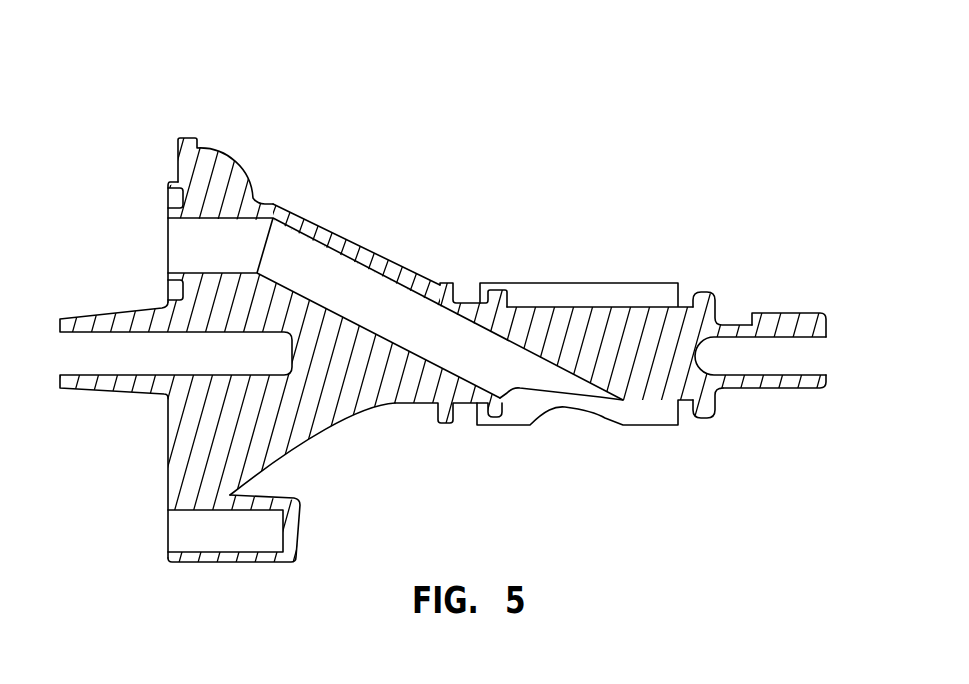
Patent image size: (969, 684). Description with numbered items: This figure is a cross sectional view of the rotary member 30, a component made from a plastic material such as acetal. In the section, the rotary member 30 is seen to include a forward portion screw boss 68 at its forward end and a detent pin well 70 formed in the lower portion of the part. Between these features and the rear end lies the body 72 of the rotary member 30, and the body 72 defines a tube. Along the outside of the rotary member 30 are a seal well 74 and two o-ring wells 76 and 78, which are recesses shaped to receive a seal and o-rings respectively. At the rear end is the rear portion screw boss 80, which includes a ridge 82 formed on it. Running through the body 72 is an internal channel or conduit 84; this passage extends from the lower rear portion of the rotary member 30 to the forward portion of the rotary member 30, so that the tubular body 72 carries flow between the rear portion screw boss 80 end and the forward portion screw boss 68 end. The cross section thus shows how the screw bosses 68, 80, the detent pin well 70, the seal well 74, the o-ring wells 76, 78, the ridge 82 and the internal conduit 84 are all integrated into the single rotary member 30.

The rotary member 30 is at (547, 173).
The forward portion screw boss 68 is at (100, 393).
The detent pin well 70 is at (224, 552).
The body 72 is at (393, 262).
The seal well 74 is at (176, 177).
The o-ring well 76 is at (470, 303).
The o-ring well 78 is at (729, 322).
The rear portion screw boss 80 is at (772, 388).
The ridge 82 is at (793, 313).
The internal channel or conduit 84 is at (292, 231).